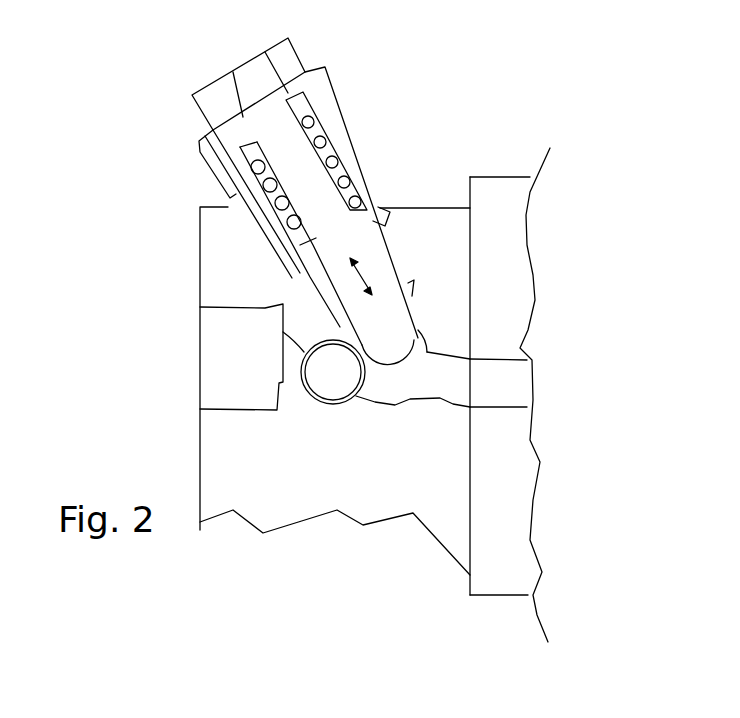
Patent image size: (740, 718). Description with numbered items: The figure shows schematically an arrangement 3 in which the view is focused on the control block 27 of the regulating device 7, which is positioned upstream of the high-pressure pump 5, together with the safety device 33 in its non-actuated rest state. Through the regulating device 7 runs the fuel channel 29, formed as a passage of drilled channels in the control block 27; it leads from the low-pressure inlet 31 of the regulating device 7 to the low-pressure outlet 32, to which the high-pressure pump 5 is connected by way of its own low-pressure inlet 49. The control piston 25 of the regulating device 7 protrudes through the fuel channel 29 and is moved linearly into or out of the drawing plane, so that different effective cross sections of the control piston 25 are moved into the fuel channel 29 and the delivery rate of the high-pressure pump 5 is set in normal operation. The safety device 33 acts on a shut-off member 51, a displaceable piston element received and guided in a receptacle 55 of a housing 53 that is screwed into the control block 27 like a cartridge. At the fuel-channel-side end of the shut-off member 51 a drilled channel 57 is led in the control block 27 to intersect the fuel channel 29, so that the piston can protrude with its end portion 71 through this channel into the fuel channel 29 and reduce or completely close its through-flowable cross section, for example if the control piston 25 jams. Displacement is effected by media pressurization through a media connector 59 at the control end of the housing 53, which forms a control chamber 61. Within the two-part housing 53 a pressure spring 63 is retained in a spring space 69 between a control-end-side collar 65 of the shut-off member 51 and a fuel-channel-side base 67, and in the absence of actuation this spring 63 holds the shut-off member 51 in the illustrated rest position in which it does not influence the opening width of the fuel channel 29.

The arrangement 3 is at (473, 146).
The high-pressure pump 5 is at (500, 537).
The regulating device 7 is at (185, 268).
The control piston 25 is at (324, 368).
The control block 27 is at (260, 462).
The fuel channel 29 is at (413, 379).
The low-pressure inlet 31 is at (241, 357).
The low-pressure outlet 32 is at (458, 392).
The safety device 33 is at (372, 114).
The low-pressure inlet 49 is at (485, 369).
The shut-off member 51 is at (301, 243).
The housing 53 is at (346, 158).
The receptacle 55 is at (374, 271).
The channel 57 is at (425, 350).
The media connector 59 is at (240, 67).
The control chamber 61 is at (248, 84).
The spring 63 is at (350, 125).
The collar 65 is at (200, 146).
The base 67 is at (288, 250).
The spring space 69 is at (226, 180).
The end portion 71 is at (388, 346).